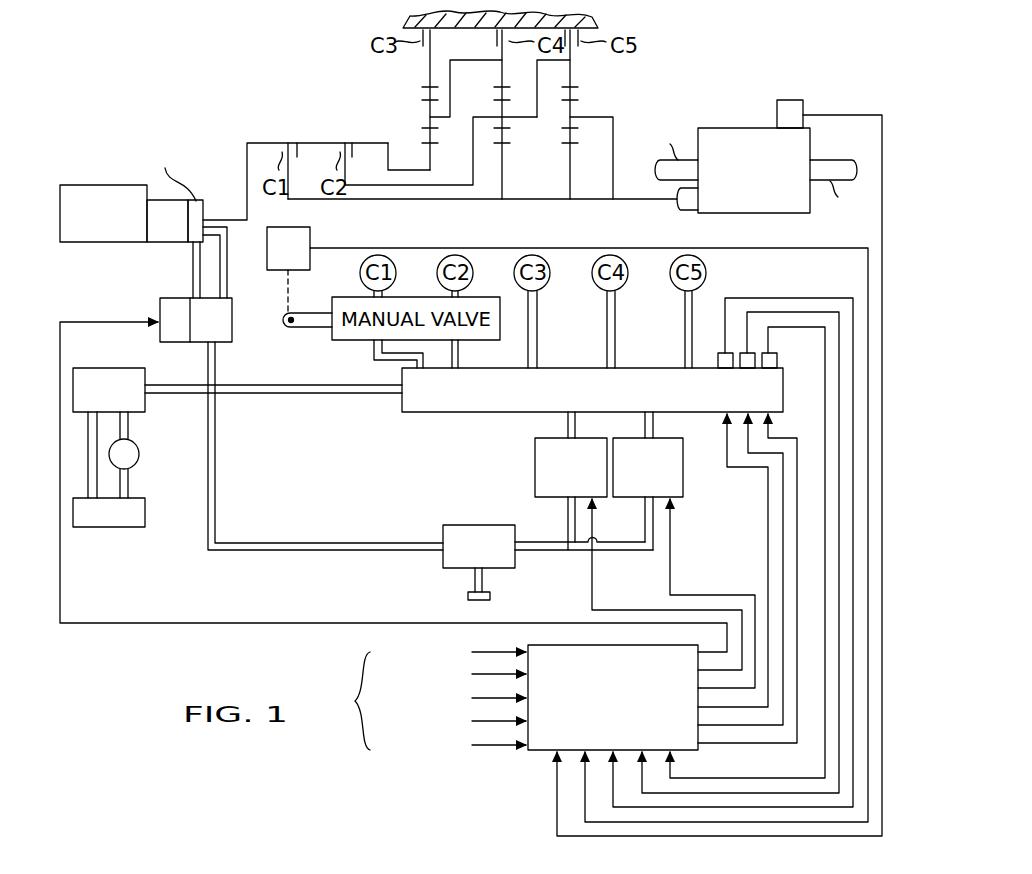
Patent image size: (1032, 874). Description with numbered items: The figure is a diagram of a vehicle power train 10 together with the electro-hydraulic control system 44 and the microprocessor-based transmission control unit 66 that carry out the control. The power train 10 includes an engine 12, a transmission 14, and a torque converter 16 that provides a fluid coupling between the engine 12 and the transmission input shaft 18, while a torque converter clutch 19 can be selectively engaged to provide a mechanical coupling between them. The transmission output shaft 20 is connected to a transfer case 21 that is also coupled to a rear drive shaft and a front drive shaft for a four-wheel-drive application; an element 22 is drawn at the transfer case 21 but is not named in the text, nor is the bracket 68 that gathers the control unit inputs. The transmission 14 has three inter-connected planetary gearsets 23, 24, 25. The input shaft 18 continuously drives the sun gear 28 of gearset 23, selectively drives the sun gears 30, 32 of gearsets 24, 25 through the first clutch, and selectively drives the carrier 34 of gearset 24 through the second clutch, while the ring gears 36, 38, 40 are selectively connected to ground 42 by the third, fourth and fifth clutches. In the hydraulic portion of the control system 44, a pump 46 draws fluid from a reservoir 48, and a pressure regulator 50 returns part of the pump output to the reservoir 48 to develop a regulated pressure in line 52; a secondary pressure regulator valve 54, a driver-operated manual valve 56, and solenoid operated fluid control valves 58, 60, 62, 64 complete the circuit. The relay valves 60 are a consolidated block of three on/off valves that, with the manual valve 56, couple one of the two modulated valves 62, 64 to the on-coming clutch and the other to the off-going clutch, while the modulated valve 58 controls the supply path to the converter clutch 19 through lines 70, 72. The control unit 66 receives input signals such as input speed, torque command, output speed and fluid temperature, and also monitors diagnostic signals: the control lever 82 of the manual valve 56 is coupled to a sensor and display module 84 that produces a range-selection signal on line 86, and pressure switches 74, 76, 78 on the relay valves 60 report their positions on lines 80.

The vehicle power train 10 is at (273, 86).
The engine 12 is at (101, 243).
The transmission 14 is at (393, 109).
The torque converter 16 is at (166, 243).
The transmission input shaft 18 is at (247, 156).
The torque converter clutch 19 is at (205, 203).
The transmission output shaft 20 is at (631, 197).
The transfer case 21 is at (741, 128).
The output speed sensor 22 is at (804, 107).
The planetary gearset 23 is at (446, 124).
The planetary gearset 24 is at (518, 124).
The planetary gearset 25 is at (585, 107).
The sun gear 28 is at (429, 159).
The sun gear 30 is at (507, 196).
The sun gear 32 is at (574, 196).
The carrier 34 is at (494, 115).
The ring gear 36 is at (430, 63).
The ring gear 38 is at (496, 42).
The ring gear 40 is at (573, 50).
The ground 42 is at (598, 24).
The electro-hydraulic control system 44 is at (897, 289).
The pump 46 is at (139, 452).
The reservoir 48 is at (146, 512).
The pressure regulator 50 is at (111, 367).
The line 52 is at (300, 395).
The secondary pressure regulator valve 54 is at (443, 562).
The manual valve 56 is at (360, 342).
The fluid control valve 58 is at (233, 330).
The relay valves 60 is at (421, 413).
The modulated valve 62 is at (534, 483).
The modulated valve 64 is at (684, 483).
The transmission control unit 66 is at (536, 752).
The input signals 68 is at (427, 698).
The line 70 is at (190, 285).
The line 72 is at (229, 279).
The pressure switch 74 is at (721, 352).
The pressure switch 76 is at (754, 367).
The pressure switch 78 is at (778, 357).
The lines 80 is at (733, 534).
The control lever 82 is at (305, 329).
The sensor and display module 84 is at (311, 233).
The line 86 is at (748, 249).